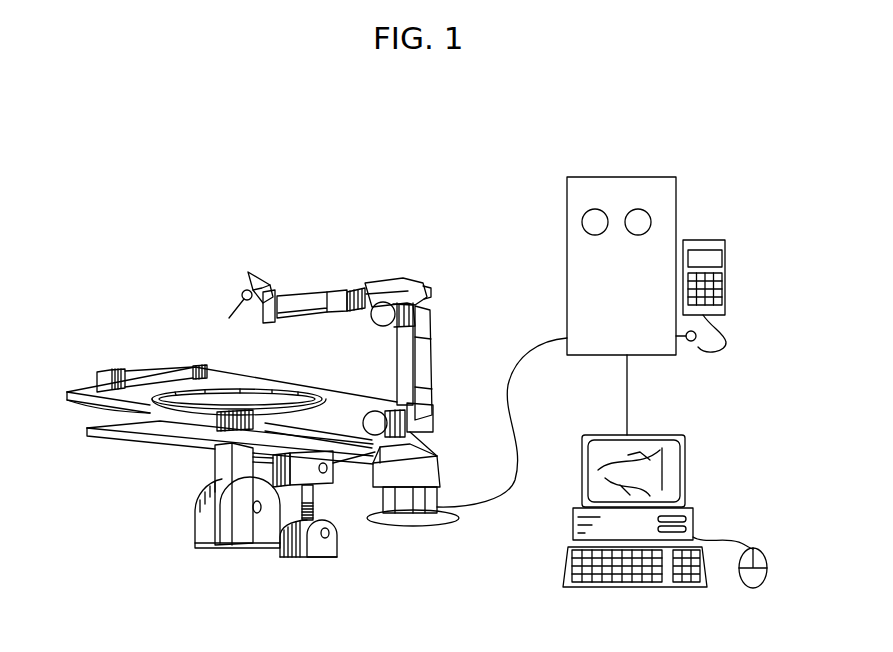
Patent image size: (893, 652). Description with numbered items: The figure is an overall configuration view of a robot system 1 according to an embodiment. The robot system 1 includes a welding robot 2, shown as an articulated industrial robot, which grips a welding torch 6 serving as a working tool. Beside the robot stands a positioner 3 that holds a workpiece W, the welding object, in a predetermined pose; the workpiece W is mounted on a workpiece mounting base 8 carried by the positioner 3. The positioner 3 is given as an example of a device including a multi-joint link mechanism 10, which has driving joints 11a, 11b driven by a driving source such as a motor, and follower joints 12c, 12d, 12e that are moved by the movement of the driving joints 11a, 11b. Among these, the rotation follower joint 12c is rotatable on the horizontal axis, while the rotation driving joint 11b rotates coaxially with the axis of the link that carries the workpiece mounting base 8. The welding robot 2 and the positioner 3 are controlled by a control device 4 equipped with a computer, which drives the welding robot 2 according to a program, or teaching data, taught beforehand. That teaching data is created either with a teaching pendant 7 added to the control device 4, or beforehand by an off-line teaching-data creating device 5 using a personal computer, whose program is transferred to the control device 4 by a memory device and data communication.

The robot system 1 is at (446, 185).
The welding robot 2 is at (376, 290).
The positioner 3 is at (126, 490).
The multi-joint link mechanism 10 is at (230, 442).
The control device 4 is at (676, 190).
The off-line teaching-data creating device 5 is at (685, 452).
The welding torch 6 is at (226, 308).
The teaching pendant 7 is at (725, 265).
The workpiece mounting base 8 is at (80, 390).
The workpiece W is at (145, 378).
The driving joint 11a is at (313, 508).
The rotation driving joint 11b is at (273, 418).
The rotation follower joint 12c is at (256, 515).
The follower joint 12d is at (330, 471).
The follower joint 12e is at (323, 540).